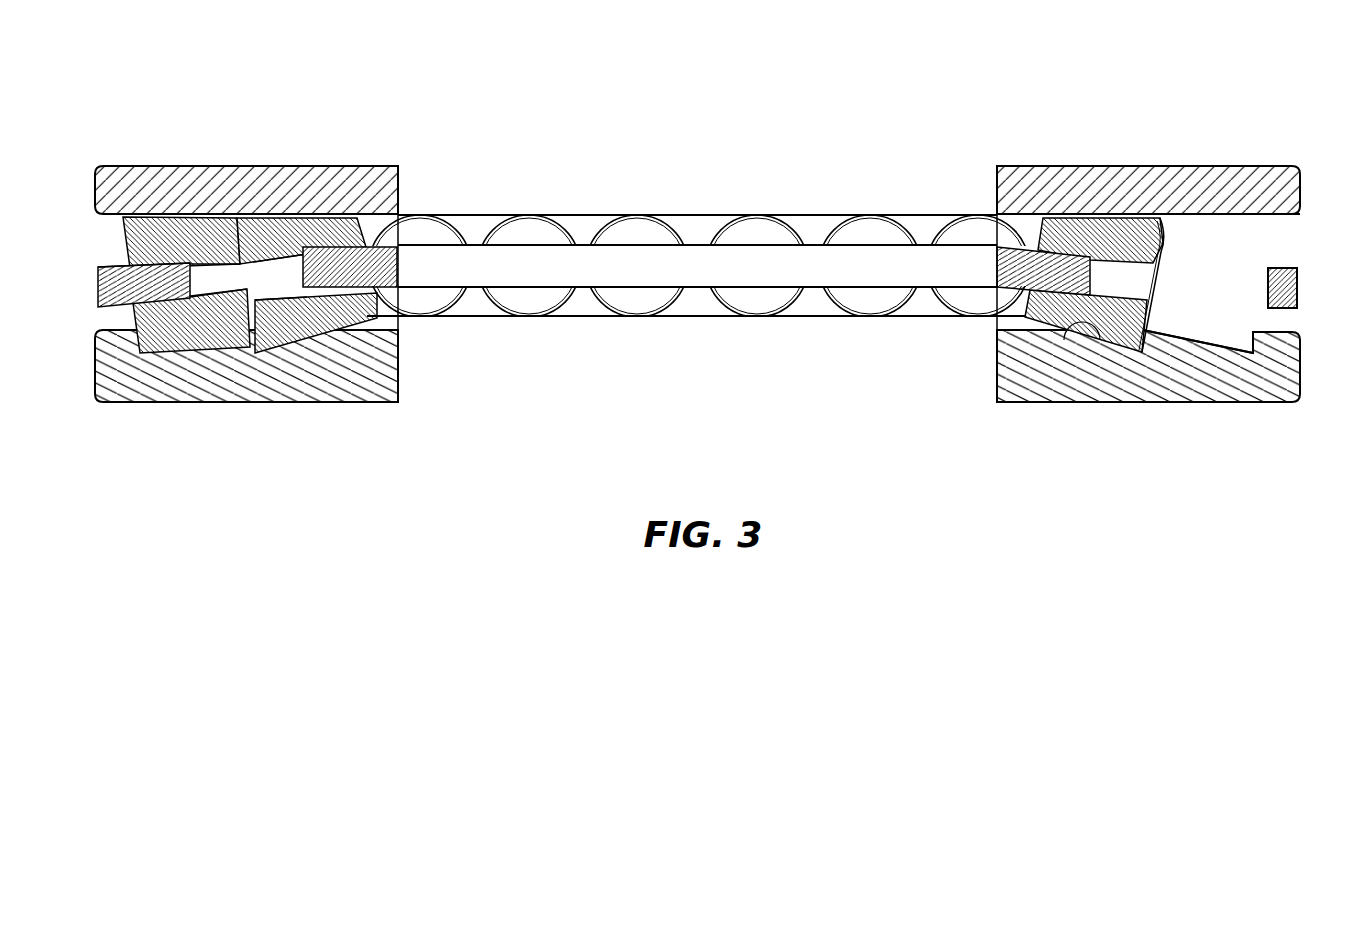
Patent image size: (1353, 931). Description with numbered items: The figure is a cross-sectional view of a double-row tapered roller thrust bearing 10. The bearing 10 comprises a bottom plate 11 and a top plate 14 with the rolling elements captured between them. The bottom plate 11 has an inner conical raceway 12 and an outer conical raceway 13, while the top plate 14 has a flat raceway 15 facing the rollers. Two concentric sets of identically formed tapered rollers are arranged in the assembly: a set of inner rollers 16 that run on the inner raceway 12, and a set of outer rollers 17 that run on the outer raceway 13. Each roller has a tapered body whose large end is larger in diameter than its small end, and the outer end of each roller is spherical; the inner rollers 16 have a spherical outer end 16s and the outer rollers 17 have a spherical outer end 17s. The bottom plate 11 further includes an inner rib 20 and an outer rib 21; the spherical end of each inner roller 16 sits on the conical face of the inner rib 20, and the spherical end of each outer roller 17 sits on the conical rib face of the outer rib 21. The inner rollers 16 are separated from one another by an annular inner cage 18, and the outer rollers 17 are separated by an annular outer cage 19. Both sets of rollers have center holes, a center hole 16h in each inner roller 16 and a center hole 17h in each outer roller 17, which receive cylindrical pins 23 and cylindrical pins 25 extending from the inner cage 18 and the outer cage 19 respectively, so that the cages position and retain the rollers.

The double-row tapered roller thrust bearing 10 is at (696, 262).
The bottom plate 11 is at (1280, 402).
The inner conical raceway 12 is at (1115, 288).
The outer conical raceway 13 is at (1207, 337).
The top plate 14 is at (1240, 165).
The flat raceway 15 is at (1223, 217).
The inner rollers 16 is at (320, 320).
The center hole of inner roller 16h is at (280, 277).
The spherical outer end of inner roller 16s is at (1163, 255).
The outer rollers 17 is at (207, 320).
The center hole of outer roller 17h is at (220, 277).
The spherical outer end of outer roller 17s is at (1270, 240).
The inner cage 18 is at (397, 265).
The outer cage 19 is at (100, 283).
The inner rib 20 is at (273, 340).
The outer rib 21 is at (175, 350).
The cylindrical pins 23 is at (330, 263).
The cylindrical pins 25 is at (161, 277).